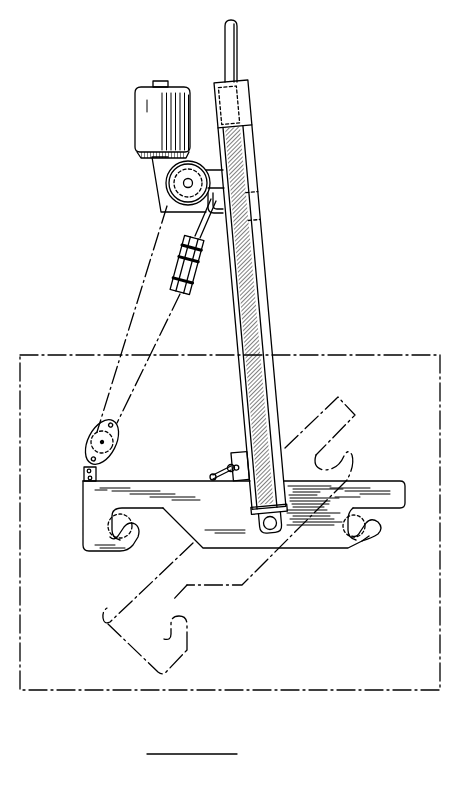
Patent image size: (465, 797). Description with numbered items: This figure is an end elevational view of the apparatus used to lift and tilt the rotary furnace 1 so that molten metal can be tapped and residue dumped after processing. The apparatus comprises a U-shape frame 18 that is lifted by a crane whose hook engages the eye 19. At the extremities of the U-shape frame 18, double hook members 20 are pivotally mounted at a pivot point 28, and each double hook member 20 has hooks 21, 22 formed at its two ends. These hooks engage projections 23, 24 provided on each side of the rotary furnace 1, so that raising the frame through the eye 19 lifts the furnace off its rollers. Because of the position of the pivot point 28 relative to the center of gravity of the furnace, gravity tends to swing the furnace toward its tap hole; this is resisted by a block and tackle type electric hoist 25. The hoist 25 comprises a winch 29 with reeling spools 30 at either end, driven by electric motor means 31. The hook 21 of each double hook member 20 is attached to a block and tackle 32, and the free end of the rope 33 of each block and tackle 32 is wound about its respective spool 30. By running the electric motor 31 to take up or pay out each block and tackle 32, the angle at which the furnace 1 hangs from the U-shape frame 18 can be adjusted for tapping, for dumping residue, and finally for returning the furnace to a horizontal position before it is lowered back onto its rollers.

The rotary furnace 1 is at (389, 345).
The U-shape frame 18 is at (270, 333).
The eye 19 is at (238, 60).
The double hook member 20 is at (378, 487).
The hook 21 is at (133, 539).
The hook 22 is at (375, 538).
The projection 23 is at (87, 538).
The projection 24 is at (334, 546).
The block and tackle type electric hoist 25 is at (146, 133).
The pivot point 28 is at (271, 530).
The winch 29 is at (184, 184).
The reeling spool 30 is at (168, 174).
The electric motor means 31 is at (145, 103).
The block and tackle 32 is at (119, 440).
The rope 33 is at (130, 321).